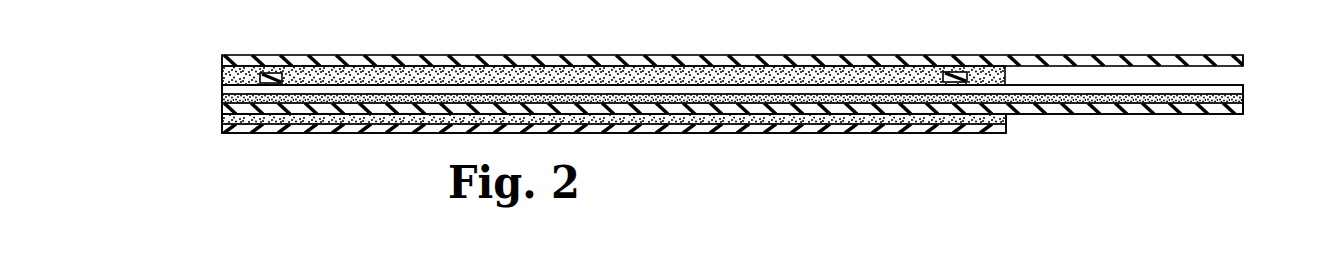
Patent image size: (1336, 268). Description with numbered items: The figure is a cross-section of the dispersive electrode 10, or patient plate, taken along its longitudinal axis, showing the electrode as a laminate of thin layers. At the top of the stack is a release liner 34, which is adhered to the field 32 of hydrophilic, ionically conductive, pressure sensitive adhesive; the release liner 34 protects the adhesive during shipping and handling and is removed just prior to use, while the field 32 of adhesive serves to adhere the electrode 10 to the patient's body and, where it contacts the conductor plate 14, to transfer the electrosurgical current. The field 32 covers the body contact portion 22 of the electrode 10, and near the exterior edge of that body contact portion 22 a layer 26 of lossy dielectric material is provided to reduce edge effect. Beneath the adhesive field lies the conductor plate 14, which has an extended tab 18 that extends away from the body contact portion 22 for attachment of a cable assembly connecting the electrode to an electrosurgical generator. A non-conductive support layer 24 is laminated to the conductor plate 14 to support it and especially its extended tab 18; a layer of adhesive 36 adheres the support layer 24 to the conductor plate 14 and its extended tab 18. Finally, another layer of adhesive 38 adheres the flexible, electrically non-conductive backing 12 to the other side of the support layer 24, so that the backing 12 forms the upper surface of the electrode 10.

The dispersive electrode 10 is at (1072, 138).
The electrically non-conductive backing 12 is at (657, 135).
The conductor plate 14 is at (222, 89).
The extended tab 18 is at (1243, 84).
The body contact portion 22 is at (976, 142).
The non-conductive support layer 24 is at (1193, 117).
The layer of lossy dielectric material 26 is at (263, 73).
The field of hydrophilic, ionically conductive, pressure sensitive adhesive 32 is at (346, 76).
The release liner 34 is at (407, 55).
The layer of adhesive 36 is at (1243, 98).
The layer of adhesive 38 is at (222, 117).